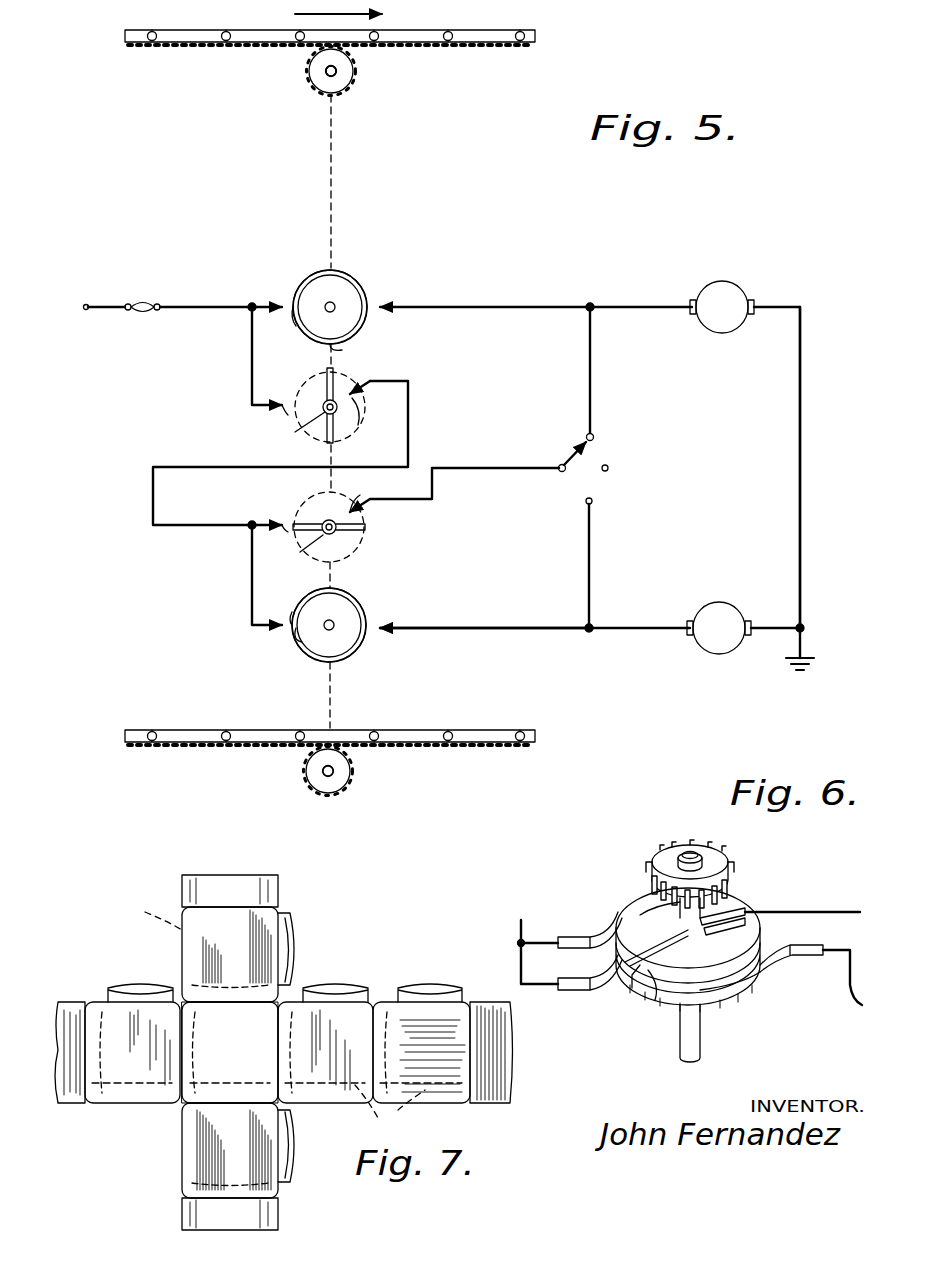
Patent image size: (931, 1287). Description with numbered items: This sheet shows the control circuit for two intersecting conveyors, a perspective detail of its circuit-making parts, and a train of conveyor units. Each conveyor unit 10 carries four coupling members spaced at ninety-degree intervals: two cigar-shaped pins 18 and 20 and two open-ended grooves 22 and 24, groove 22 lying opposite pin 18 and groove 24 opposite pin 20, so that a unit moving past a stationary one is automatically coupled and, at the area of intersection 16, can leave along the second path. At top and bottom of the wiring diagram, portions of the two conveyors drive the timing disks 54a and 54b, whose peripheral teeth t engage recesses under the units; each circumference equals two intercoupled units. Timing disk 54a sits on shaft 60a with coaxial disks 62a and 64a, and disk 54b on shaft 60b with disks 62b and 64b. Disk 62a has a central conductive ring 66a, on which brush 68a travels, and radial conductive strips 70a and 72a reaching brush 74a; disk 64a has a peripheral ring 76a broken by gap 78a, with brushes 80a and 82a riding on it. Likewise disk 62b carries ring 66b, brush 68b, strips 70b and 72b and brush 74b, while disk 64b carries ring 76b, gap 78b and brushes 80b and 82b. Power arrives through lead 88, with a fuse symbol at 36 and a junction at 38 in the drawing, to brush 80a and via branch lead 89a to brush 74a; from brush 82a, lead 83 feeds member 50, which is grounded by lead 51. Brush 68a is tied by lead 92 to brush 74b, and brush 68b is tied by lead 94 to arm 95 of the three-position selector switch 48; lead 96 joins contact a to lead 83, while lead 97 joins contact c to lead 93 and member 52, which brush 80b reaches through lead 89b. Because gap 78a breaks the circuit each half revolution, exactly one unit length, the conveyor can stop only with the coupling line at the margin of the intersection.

In FIG. 7, the conveyor unit 10 is at (130, 1070).
In FIG. 7, the area of intersection 16 is at (305, 978).
In FIG. 7, the pin coupling member 18 is at (130, 985).
In FIG. 7, the pin coupling member 20 is at (292, 935).
In FIG. 7, the groove coupling member 22 is at (390, 1112).
In FIG. 7, the groove coupling member 24 is at (150, 910).
In FIG. 5, the power supply line with fuse 36 is at (95, 298).
In FIG. 5, the conductor 38 is at (270, 300).
In FIG. 5, the conveyor selector switch 48 is at (615, 443).
In FIG. 5, the member (motor or relay) 50 is at (738, 287).
In FIG. 5, the ground lead 51 is at (800, 490).
In FIG. 5, the member (motor or relay) 52 is at (730, 605).
In FIG. 5, the timing disk 54a is at (315, 80).
In FIG. 6, the timing disk 54a is at (740, 860).
In FIG. 5, the timing disk 54b is at (350, 779).
In FIG. 5, the shaft 60a is at (336, 76).
In FIG. 6, the shaft 60a is at (690, 855).
In FIG. 5, the shaft 60b is at (322, 771).
In FIG. 5, the disk 62a is at (350, 380).
In FIG. 6, the disk 62a is at (625, 905).
In FIG. 5, the disk 62b is at (355, 548).
In FIG. 5, the disk 64a is at (348, 290).
In FIG. 6, the disk 64a is at (716, 1005).
In FIG. 5, the disk 64b is at (345, 605).
In FIG. 5, the conductive ring 66a is at (284, 432).
In FIG. 6, the conductive ring 66a is at (650, 900).
In FIG. 5, the conductive ring 66b is at (290, 556).
In FIG. 5, the contact brush 68a is at (373, 422).
In FIG. 6, the contact brush 68a is at (730, 925).
In FIG. 5, the contact brush 68b is at (352, 508).
In FIG. 5, the conductive strip 70a is at (320, 378).
In FIG. 6, the conductive strip 70a is at (740, 910).
In FIG. 5, the conductive strip 70b is at (305, 512).
In FIG. 5, the conductive strip 72a is at (332, 430).
In FIG. 6, the conductive strip 72a is at (652, 985).
In FIG. 5, the conductive strip 72b is at (360, 532).
In FIG. 5, the brush 74a is at (280, 417).
In FIG. 6, the brush 74a is at (612, 918).
In FIG. 5, the brush 74b is at (280, 530).
In FIG. 5, the conductive ring 76a is at (365, 325).
In FIG. 6, the conductive ring 76a is at (740, 992).
In FIG. 5, the conductive ring 76b is at (360, 648).
In FIG. 5, the gap 78a is at (350, 347).
In FIG. 6, the gap 78a is at (630, 988).
In FIG. 5, the gap 78b is at (300, 642).
In FIG. 5, the brush 80a is at (285, 312).
In FIG. 6, the brush 80a is at (615, 975).
In FIG. 5, the brush 80b is at (276, 603).
In FIG. 5, the brush 82a is at (385, 292).
In FIG. 6, the brush 82a is at (775, 975).
In FIG. 5, the brush 82b is at (372, 612).
In FIG. 5, the lead 83 is at (528, 305).
In FIG. 6, the lead 83 is at (848, 986).
In FIG. 6, the lead 88 is at (540, 935).
In FIG. 5, the branch lead 89a is at (252, 385).
In FIG. 6, the branch lead 89a is at (515, 955).
In FIG. 5, the lead 89b is at (252, 588).
In FIG. 5, the lead 92 is at (408, 412).
In FIG. 6, the lead 92 is at (820, 908).
In FIG. 5, the lead 93 is at (636, 632).
In FIG. 5, the lead 94 is at (500, 478).
In FIG. 5, the switch arm 95 is at (560, 450).
In FIG. 5, the lead 96 is at (592, 372).
In FIG. 5, the lead 97 is at (591, 550).
In FIG. 5, the teeth t is at (355, 72).